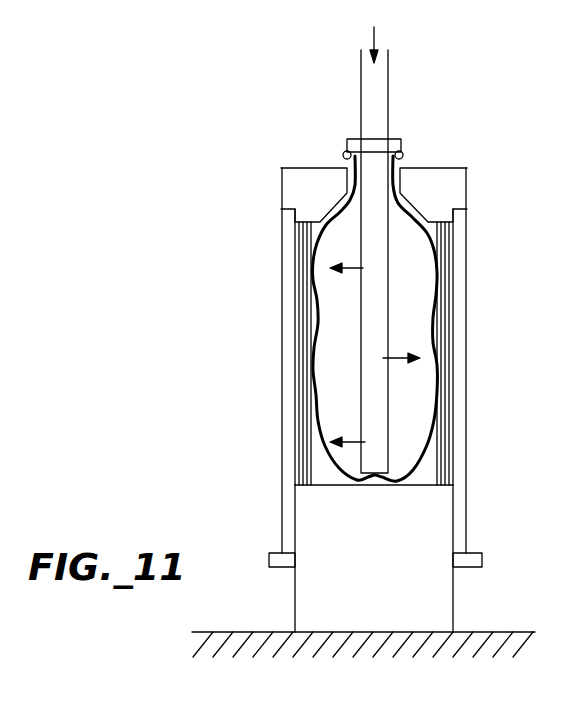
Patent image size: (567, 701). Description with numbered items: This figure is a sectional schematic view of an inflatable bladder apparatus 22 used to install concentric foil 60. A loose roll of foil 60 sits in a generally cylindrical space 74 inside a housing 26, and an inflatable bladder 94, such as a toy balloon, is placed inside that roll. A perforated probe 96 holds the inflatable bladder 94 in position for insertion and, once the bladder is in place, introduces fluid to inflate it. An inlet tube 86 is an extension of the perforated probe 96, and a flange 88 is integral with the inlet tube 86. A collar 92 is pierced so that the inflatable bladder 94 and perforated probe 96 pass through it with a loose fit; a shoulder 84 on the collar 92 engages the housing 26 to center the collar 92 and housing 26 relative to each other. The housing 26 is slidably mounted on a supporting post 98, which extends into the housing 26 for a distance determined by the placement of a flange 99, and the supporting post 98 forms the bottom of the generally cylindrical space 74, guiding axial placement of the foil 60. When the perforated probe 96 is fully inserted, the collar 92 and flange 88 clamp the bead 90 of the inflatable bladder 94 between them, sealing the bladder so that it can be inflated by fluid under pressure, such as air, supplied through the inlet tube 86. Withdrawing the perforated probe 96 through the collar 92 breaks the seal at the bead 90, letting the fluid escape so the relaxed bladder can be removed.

The blow molding apparatus 22 is at (199, 321).
The housing 26 is at (282, 270).
The foil 60 is at (300, 342).
The generally cylindrical space 74 is at (433, 233).
The shoulder 84 is at (283, 210).
The inlet tube 86 is at (388, 78).
The flange 88 is at (393, 137).
The bead 90 is at (405, 157).
The collar 92 is at (282, 184).
The inflatable bladder 94 is at (310, 425).
The perforated probe 96 is at (358, 382).
The supporting post 98 is at (296, 593).
The flange 99 is at (269, 555).